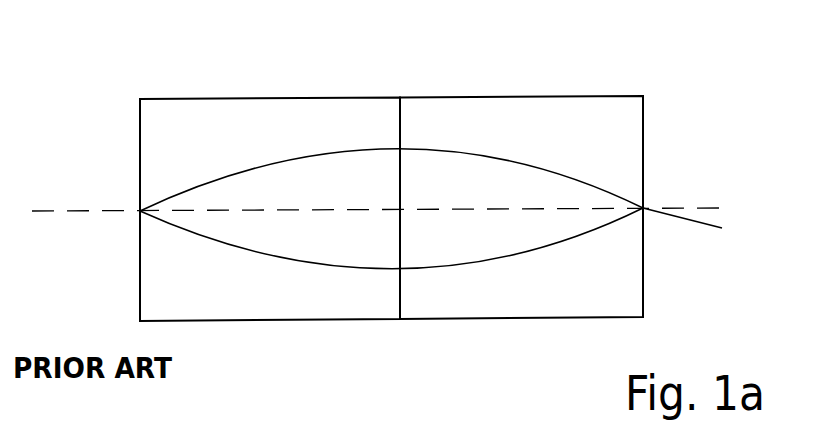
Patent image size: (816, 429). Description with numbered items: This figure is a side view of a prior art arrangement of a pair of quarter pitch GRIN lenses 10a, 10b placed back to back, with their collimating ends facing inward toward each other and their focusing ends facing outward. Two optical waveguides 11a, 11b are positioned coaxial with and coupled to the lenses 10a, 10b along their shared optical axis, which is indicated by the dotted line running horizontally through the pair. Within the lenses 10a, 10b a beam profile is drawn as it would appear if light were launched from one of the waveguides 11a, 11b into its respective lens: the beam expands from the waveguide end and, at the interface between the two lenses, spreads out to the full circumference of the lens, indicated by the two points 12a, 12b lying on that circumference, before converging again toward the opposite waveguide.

The quarter pitch GRIN lens 10a is at (240, 117).
The quarter pitch GRIN lens 10b is at (598, 110).
The optical waveguide 11a is at (140, 211).
The optical waveguide 11b is at (643, 208).
The point on the lens circumference 12a is at (399, 150).
The point on the lens circumference 12b is at (399, 268).